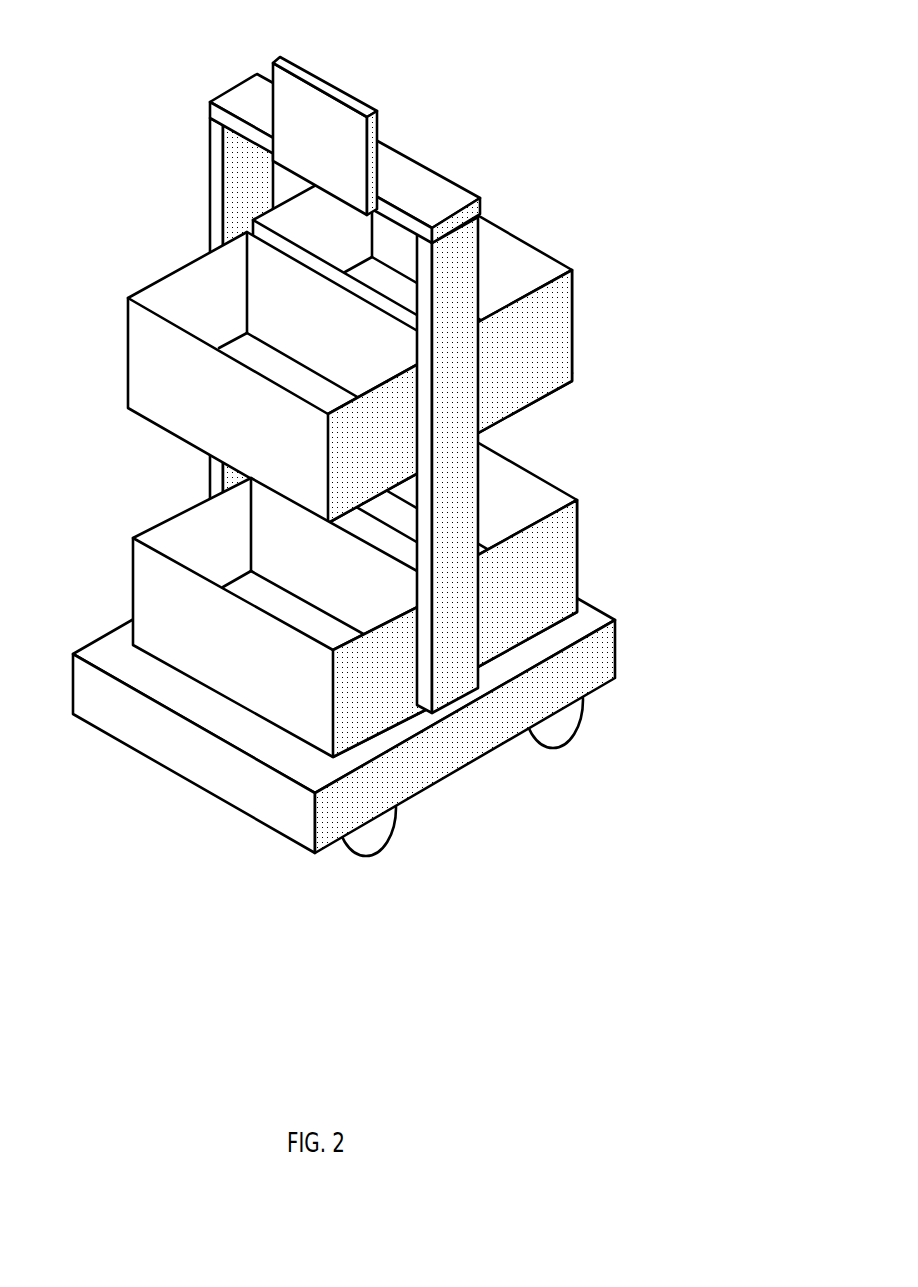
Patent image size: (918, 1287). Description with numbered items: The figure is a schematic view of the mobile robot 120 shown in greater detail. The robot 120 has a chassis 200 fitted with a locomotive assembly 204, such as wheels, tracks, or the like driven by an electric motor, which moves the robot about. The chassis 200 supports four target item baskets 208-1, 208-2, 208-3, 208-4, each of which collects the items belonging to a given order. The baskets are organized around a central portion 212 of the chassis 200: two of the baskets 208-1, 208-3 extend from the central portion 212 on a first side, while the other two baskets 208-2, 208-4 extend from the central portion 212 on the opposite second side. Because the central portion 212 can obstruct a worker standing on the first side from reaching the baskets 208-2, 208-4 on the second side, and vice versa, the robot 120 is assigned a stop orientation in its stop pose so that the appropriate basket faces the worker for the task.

The robot 120 is at (371, 544).
The chassis 200 is at (240, 795).
The locomotive assembly 204 is at (563, 757).
The target item basket 208-1 is at (157, 279).
The target item basket 208-2 is at (525, 238).
The target item basket 208-3 is at (162, 518).
The target item basket 208-4 is at (553, 486).
The central portion 212 is at (425, 192).